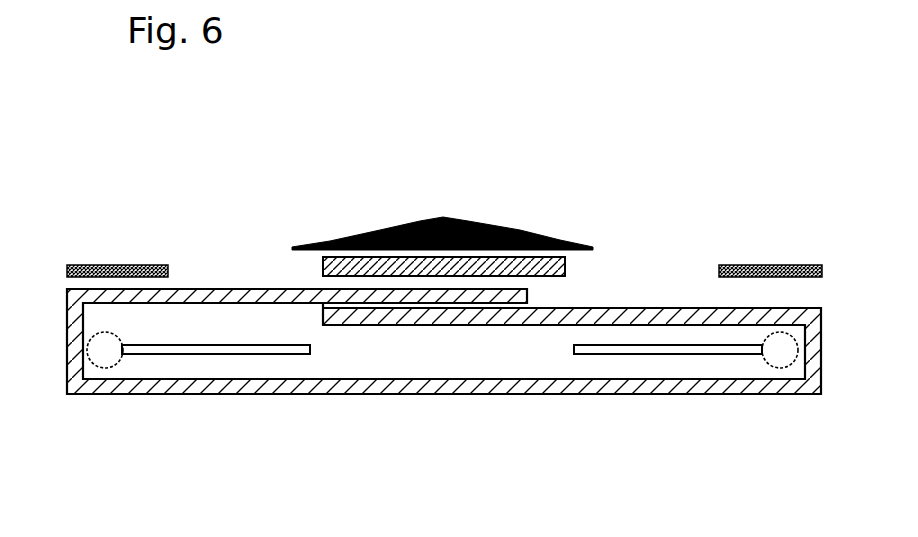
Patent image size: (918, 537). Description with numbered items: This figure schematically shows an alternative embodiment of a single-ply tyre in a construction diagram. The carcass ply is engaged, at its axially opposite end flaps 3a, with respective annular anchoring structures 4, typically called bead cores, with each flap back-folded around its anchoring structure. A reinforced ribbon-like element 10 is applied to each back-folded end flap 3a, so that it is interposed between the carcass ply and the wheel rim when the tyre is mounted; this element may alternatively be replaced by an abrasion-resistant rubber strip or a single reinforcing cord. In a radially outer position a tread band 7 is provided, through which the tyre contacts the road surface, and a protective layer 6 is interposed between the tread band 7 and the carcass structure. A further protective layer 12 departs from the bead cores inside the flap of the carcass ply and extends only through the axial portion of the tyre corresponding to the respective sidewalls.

The end flap 3a is at (262, 290).
The annular anchoring structure 4 is at (106, 352).
The protective layer 6 is at (380, 256).
The tread band 7 is at (470, 218).
The reinforced ribbon-like element 10 is at (131, 265).
The protective layer 12 is at (233, 351).